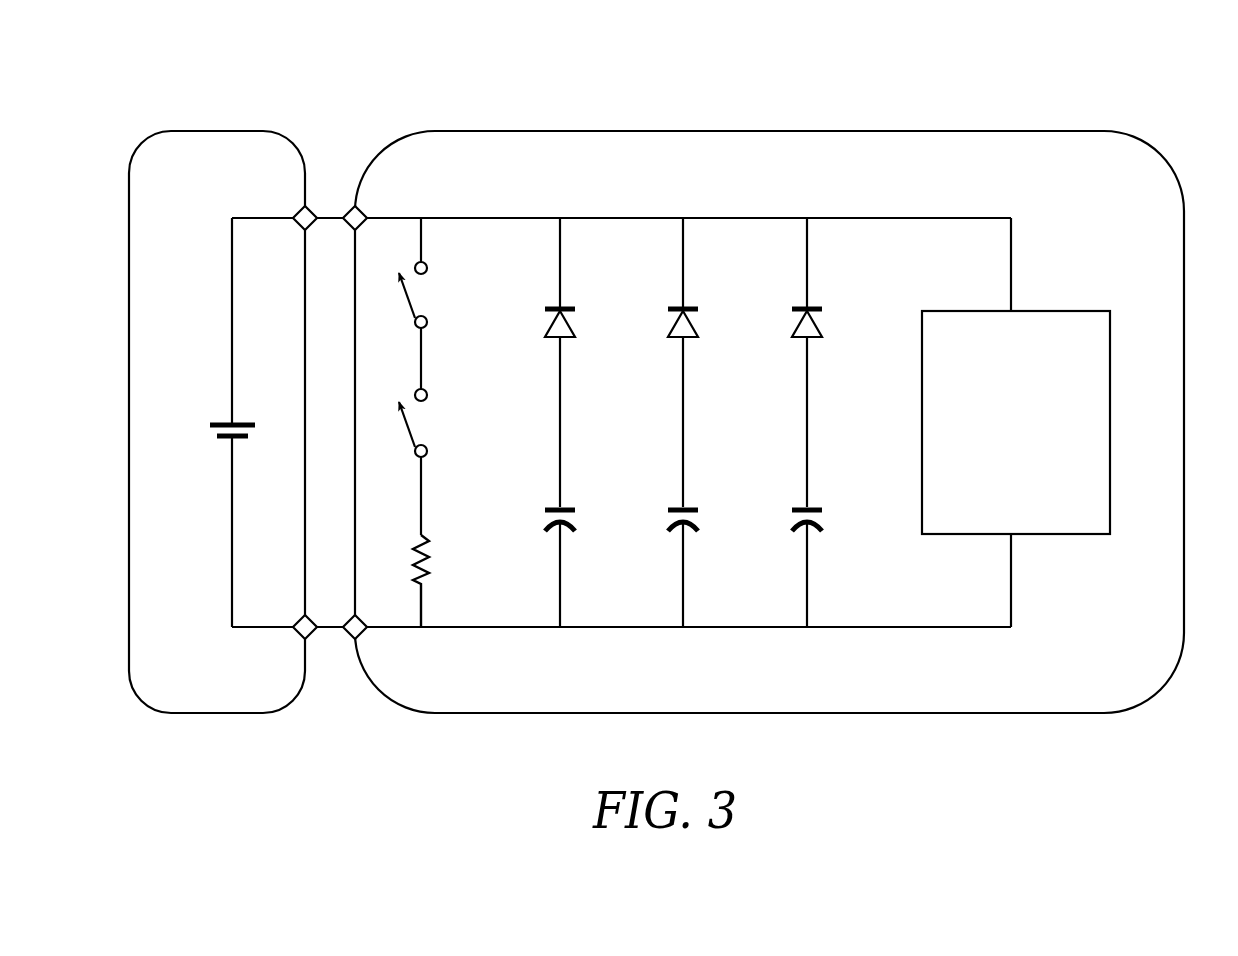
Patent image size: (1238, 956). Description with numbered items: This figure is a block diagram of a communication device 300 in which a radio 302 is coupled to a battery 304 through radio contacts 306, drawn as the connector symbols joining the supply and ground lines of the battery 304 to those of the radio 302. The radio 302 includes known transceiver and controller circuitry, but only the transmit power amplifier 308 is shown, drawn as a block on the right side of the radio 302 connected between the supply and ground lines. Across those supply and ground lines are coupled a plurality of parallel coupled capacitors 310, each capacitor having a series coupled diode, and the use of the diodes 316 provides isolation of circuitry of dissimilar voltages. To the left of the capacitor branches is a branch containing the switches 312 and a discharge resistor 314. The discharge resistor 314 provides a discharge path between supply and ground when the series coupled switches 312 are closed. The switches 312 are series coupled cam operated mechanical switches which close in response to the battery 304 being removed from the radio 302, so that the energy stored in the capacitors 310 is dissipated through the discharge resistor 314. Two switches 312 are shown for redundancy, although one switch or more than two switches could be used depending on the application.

The communication device 300 is at (70, 80).
The radio 302 is at (1159, 156).
The battery 304 is at (141, 141).
The radio contacts 306 is at (365, 210).
The transmit power amplifier 308 is at (1093, 311).
The capacitors 310 is at (553, 507).
The switches 312 is at (409, 300).
The discharge resistor 314 is at (430, 562).
The diodes 316 is at (567, 308).